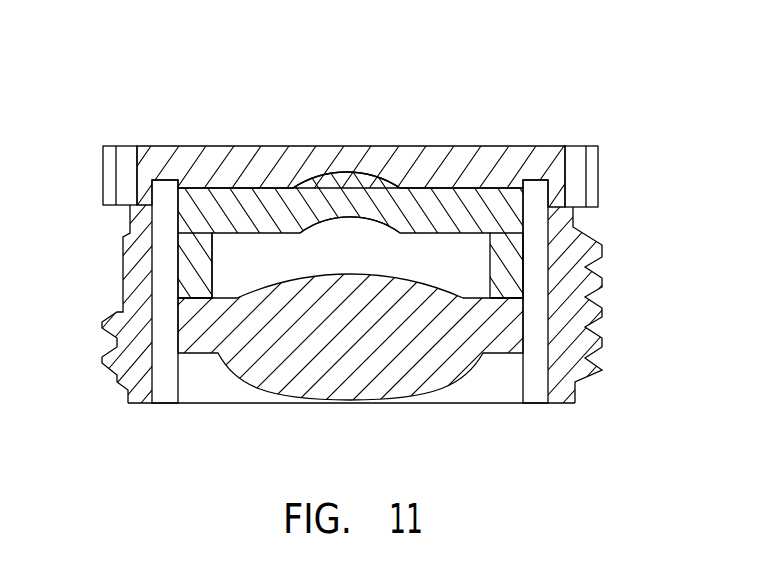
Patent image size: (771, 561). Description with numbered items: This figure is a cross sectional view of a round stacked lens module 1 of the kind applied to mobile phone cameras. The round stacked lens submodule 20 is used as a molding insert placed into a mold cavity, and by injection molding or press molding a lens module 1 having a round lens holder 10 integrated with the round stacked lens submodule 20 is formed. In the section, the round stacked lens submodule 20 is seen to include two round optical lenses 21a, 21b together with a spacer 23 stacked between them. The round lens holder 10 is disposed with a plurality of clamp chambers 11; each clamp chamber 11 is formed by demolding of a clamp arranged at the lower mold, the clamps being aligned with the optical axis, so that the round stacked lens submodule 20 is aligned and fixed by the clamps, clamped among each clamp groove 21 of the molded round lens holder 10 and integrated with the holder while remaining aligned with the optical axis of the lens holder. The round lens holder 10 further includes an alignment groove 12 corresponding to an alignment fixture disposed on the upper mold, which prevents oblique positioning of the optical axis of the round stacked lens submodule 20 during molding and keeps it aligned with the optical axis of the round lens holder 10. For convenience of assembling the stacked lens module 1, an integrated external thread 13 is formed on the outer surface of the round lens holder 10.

The round stacked lens module 1 is at (572, 110).
The round lens holder 10 is at (168, 143).
The clamp chamber 11 is at (163, 237).
The alignment groove 12 is at (209, 186).
The external thread 13 is at (100, 362).
The round stacked lens submodule 20 is at (362, 185).
The clamp groove 21 is at (400, 270).
The round optical lens 21a is at (327, 190).
The round optical lens 21b is at (433, 365).
The spacer 23 is at (508, 288).